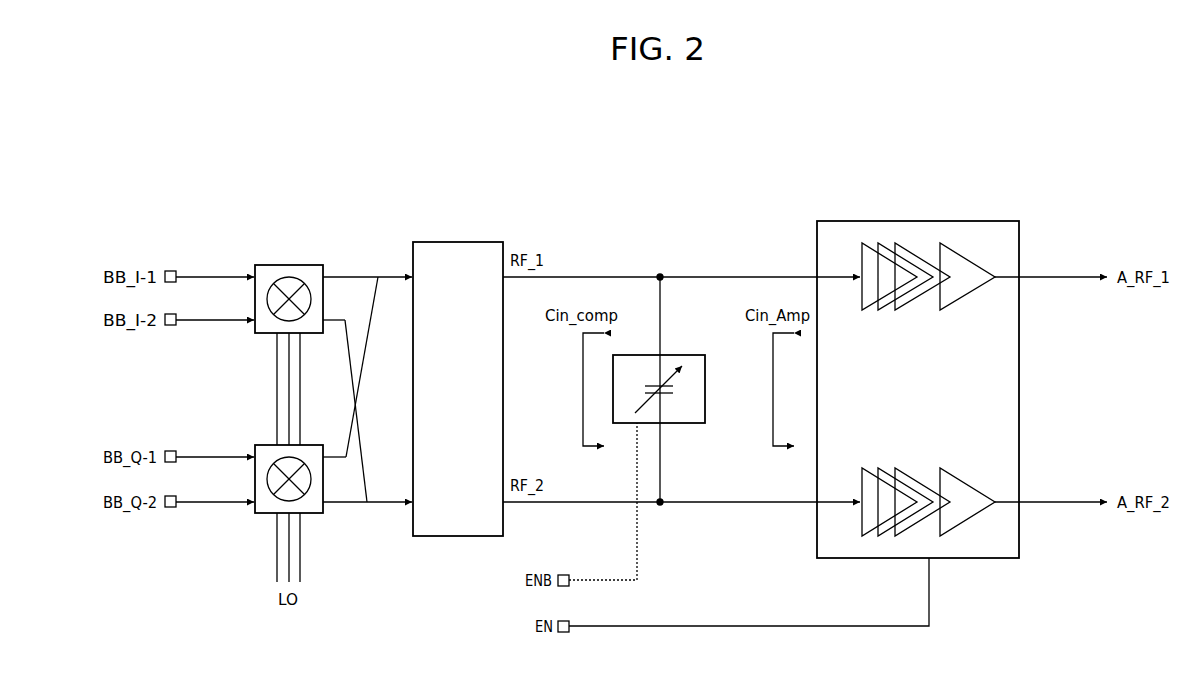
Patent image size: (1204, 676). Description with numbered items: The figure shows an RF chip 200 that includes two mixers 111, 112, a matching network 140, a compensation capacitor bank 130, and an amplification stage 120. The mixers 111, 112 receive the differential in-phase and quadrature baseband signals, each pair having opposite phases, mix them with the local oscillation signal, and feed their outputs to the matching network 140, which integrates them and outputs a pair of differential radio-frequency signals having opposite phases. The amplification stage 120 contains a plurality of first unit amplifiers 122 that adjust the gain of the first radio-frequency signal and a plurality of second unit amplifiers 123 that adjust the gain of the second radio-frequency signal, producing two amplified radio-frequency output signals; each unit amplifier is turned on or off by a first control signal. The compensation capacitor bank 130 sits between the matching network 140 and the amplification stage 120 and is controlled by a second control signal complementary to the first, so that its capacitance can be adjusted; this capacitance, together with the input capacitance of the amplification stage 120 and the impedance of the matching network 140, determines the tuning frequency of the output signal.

The mixer 111 is at (300, 265).
The mixer 112 is at (312, 513).
The matching network 140 is at (480, 226).
The compensation capacitor bank 130 is at (690, 355).
The amplification stage 120 is at (920, 221).
The first unit amplifiers 122 is at (995, 320).
The second unit amplifiers 123 is at (995, 456).
The RF chip 200 is at (1022, 166).